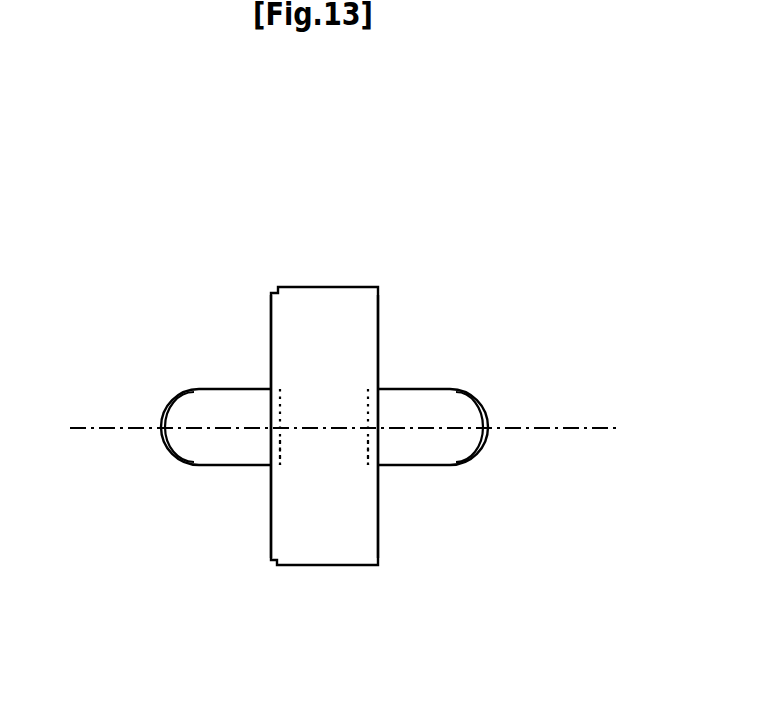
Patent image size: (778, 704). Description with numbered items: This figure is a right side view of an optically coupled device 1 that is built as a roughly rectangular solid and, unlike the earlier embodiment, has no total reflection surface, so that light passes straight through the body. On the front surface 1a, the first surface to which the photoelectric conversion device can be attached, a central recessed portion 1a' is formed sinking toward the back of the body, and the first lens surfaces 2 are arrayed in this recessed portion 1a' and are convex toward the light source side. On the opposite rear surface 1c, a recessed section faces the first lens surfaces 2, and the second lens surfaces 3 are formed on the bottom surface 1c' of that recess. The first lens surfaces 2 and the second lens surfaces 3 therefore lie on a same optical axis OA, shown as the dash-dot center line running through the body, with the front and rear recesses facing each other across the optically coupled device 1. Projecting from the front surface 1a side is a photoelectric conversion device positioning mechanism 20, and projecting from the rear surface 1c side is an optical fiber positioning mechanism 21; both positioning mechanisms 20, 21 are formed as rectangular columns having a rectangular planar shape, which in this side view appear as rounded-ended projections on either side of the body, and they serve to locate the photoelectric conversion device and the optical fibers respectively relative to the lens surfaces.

The optically coupled device 1 is at (150, 206).
The front surface 1a is at (210, 426).
The recessed portion 1a' is at (224, 474).
The rear surface 1c is at (441, 431).
The bottom surface of recessed section 1c' is at (438, 477).
The first lens surfaces 2 is at (268, 422).
The second lens surfaces 3 is at (368, 420).
The photoelectric conversion device positioning mechanism 20 is at (190, 388).
The optical fiber positioning mechanism 21 is at (450, 389).
The optical axis OA is at (105, 423).